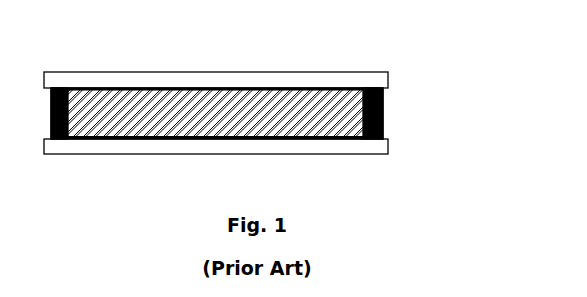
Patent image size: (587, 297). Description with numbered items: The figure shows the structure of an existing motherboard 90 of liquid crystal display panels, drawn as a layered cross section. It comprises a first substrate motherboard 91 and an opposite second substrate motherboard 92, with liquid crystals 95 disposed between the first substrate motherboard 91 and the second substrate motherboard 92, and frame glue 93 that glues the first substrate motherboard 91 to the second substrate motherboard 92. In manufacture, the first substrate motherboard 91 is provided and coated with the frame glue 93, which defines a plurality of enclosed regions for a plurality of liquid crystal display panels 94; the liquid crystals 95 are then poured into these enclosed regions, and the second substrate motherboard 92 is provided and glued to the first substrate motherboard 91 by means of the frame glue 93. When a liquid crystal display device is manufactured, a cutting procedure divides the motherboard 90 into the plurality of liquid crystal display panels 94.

The motherboard of liquid crystal display panels 90 is at (112, 72).
The first substrate motherboard 91 is at (295, 88).
The second substrate motherboard 92 is at (324, 147).
The frame glue 93 is at (387, 93).
The liquid crystal display panels 94 is at (221, 84).
The liquid crystals 95 is at (212, 112).